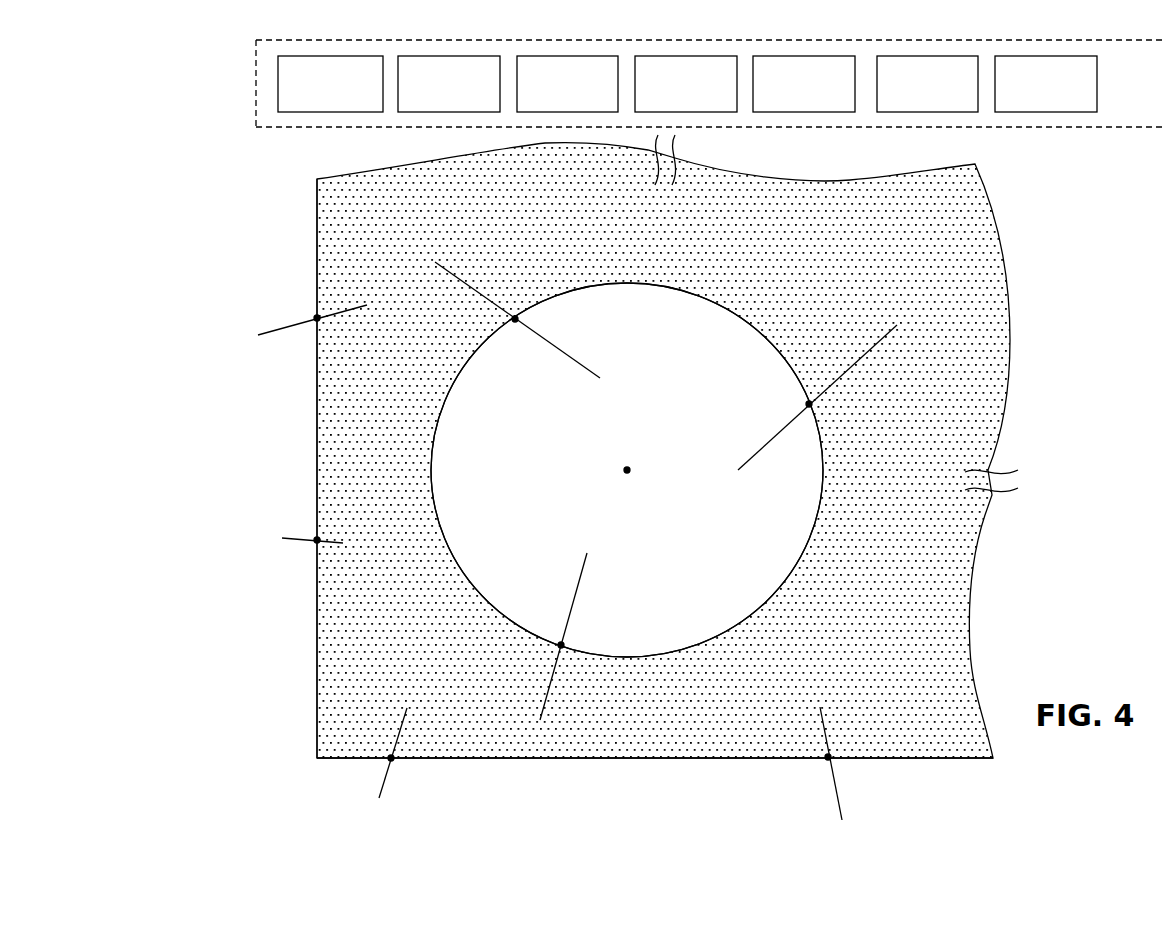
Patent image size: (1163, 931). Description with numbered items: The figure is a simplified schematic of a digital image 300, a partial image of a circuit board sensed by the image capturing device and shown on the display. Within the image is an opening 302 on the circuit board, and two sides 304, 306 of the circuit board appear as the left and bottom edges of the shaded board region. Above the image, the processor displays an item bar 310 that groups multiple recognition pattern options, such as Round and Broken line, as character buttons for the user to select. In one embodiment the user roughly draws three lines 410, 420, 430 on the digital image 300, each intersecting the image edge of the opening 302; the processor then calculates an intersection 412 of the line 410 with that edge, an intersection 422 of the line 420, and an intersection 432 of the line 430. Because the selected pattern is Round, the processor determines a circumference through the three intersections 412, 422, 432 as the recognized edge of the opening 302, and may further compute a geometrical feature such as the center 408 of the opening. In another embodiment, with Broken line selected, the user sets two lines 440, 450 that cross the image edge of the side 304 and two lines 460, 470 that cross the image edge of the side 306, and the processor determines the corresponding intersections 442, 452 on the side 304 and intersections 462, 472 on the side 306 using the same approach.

The digital image 300 is at (286, 256).
The opening 302 is at (628, 283).
The side of the circuit board 304 is at (330, 646).
The side of the circuit board 306 is at (890, 746).
The item bar 310 is at (256, 84).
The center 408 is at (627, 470).
The line 410 is at (472, 275).
The intersection 412 is at (515, 319).
The line 420 is at (881, 331).
The intersection 422 is at (809, 404).
The line 430 is at (578, 559).
The intersection 432 is at (561, 645).
The line 440 is at (276, 321).
The intersection 442 is at (317, 318).
The line 450 is at (294, 527).
The intersection 452 is at (317, 540).
The line 460 is at (412, 733).
The intersection 462 is at (391, 758).
The line 470 is at (819, 707).
The intersection 472 is at (828, 757).